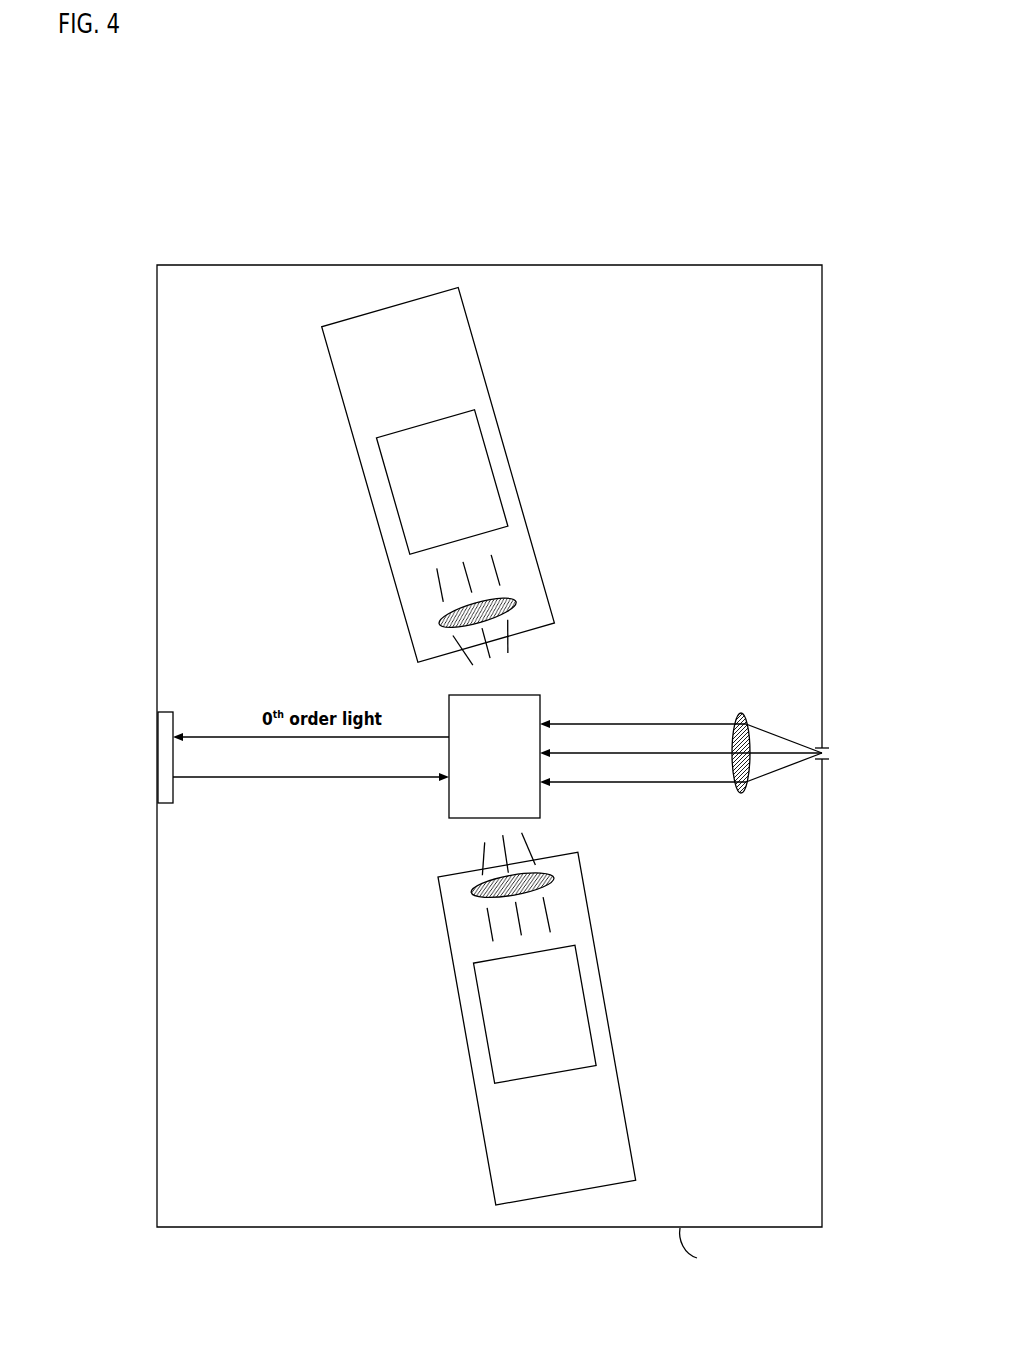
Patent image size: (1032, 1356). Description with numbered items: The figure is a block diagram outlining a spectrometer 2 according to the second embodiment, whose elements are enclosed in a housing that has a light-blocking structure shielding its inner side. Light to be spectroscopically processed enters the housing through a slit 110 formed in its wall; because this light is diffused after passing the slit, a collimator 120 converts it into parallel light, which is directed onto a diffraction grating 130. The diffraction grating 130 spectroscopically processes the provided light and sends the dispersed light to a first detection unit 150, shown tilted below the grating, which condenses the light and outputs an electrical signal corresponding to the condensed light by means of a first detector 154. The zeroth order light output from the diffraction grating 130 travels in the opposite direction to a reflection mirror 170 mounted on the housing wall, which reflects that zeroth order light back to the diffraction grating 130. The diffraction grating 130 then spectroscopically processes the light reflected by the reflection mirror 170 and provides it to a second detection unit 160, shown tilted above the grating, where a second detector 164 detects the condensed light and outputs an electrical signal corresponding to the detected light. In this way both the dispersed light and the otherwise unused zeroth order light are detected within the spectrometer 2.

The spectrometer 2 is at (168, 212).
The slit 110 is at (825, 760).
The collimator 120 is at (743, 793).
The diffraction grating 130 is at (494, 756).
The first detection unit 150 is at (539, 1014).
The first detector 154 is at (534, 1014).
The second detection unit 160 is at (432, 484).
The second detector 164 is at (441, 482).
The reflection mirror 170 is at (168, 717).